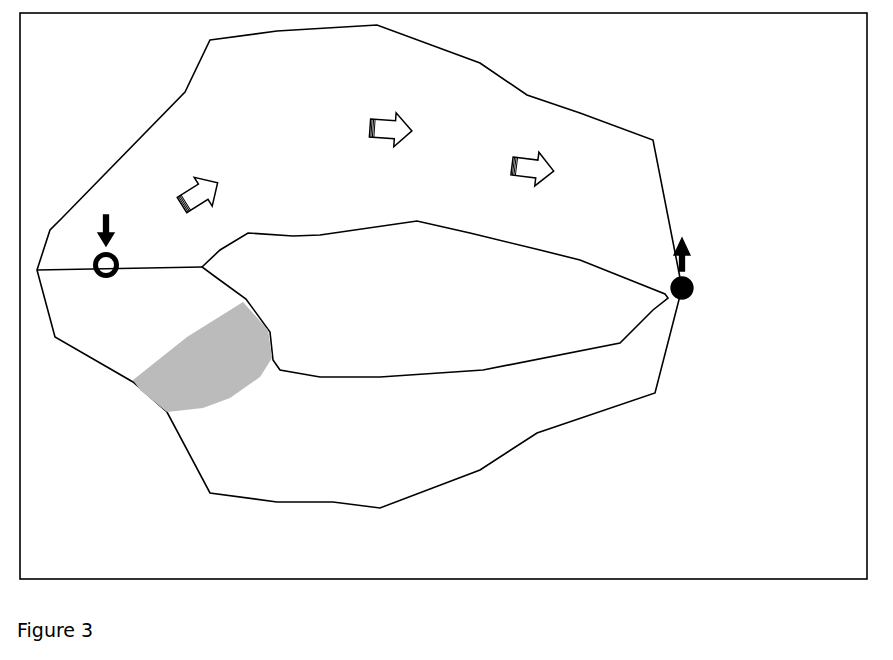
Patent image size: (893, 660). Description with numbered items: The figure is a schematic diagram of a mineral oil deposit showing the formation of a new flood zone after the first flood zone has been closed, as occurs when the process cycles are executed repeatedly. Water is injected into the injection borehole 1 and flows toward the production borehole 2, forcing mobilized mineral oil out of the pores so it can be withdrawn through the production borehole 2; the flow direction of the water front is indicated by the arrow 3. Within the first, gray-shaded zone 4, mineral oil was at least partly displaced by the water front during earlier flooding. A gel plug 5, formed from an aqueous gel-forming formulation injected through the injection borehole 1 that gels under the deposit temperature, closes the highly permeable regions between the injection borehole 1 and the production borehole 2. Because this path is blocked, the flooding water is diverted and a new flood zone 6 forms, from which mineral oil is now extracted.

The injection borehole 1 is at (106, 270).
The production borehole 2 is at (684, 300).
The arrow indicating flow direction 3 is at (408, 130).
The zone 4 is at (447, 435).
The gel plug 5 is at (178, 375).
The new flood zone 6 is at (152, 152).